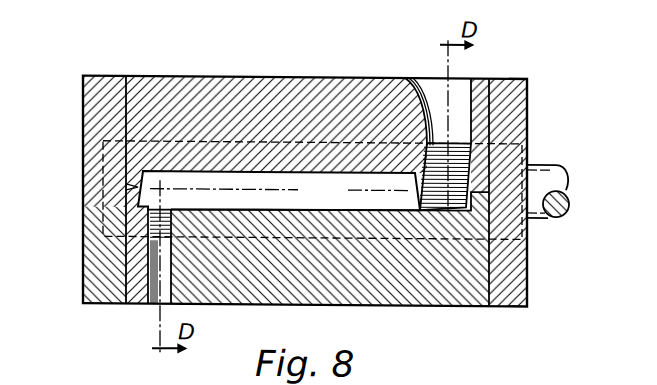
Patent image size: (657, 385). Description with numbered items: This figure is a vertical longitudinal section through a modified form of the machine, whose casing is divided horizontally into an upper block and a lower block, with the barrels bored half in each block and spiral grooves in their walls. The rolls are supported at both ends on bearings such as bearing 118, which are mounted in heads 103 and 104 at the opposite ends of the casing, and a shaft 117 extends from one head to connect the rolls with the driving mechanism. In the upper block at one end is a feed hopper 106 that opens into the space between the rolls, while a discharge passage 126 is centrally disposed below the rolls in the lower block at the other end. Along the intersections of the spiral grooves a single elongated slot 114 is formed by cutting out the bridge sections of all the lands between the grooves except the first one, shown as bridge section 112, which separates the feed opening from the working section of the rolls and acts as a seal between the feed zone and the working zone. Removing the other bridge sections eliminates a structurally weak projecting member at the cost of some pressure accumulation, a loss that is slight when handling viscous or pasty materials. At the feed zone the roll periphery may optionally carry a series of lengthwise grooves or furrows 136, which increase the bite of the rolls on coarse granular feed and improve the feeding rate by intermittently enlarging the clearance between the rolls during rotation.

The head 103 is at (100, 108).
The head 104 is at (518, 86).
The feed hopper 106 is at (432, 87).
The bridge section 112 is at (416, 175).
The elongated slot 114 is at (279, 191).
The shaft 117 is at (546, 214).
The bearing 118 is at (522, 148).
The discharge passage 126 is at (150, 302).
The lengthwise grooves or furrows 136 is at (423, 144).